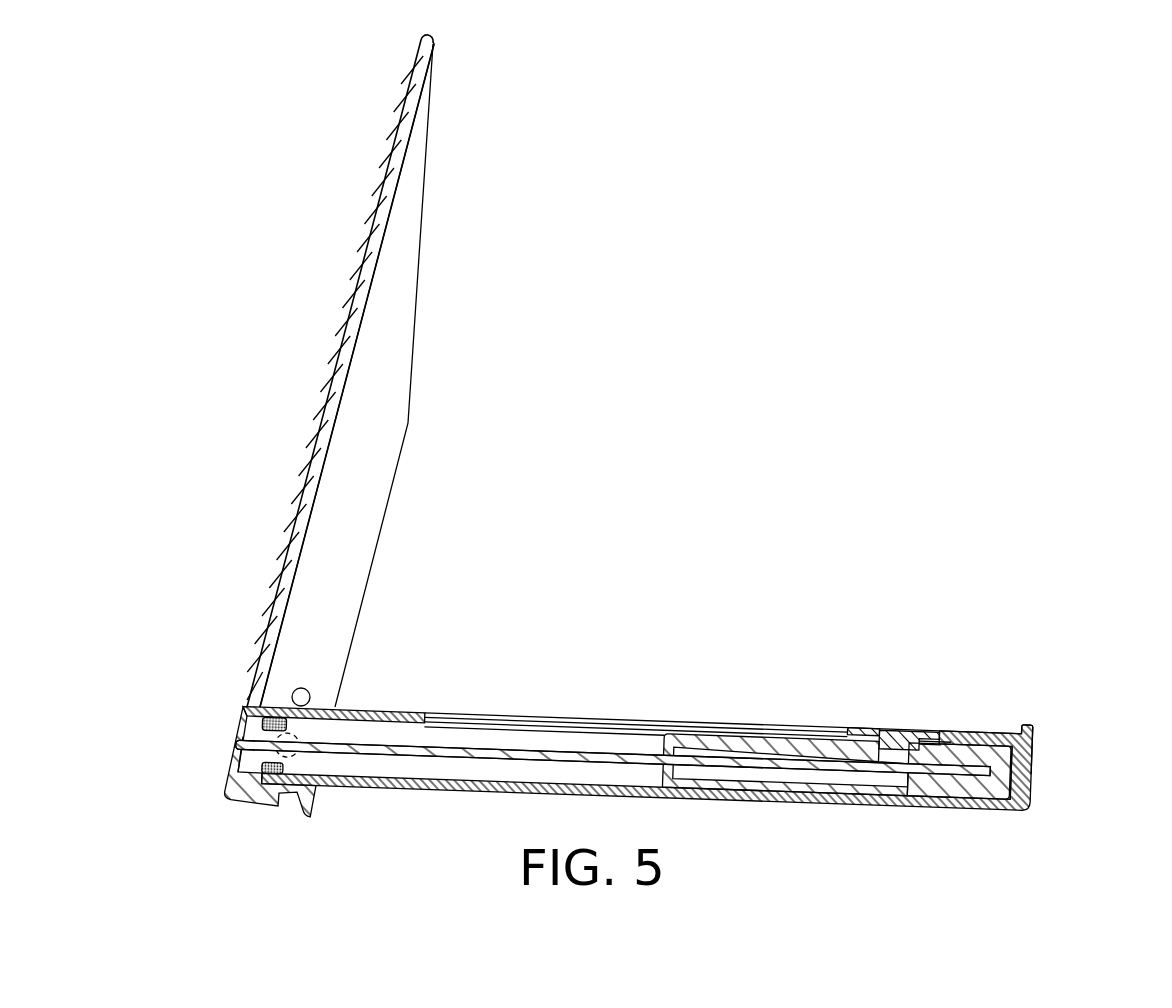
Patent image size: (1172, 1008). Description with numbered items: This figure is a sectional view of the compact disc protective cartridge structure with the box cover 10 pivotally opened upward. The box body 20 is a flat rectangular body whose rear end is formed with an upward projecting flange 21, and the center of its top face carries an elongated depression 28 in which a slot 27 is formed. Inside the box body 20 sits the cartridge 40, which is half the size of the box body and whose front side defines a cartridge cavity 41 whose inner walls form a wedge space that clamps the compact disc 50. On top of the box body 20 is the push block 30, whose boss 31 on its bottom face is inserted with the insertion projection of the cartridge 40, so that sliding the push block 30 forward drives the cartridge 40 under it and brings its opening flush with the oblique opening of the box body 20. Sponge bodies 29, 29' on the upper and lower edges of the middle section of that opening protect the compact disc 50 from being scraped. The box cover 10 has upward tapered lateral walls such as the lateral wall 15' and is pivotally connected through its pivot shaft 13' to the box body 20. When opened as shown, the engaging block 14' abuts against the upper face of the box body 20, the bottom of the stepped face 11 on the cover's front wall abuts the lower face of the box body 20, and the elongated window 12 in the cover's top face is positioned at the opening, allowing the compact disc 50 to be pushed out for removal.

The box cover 10 is at (346, 333).
The lateral wall 15' is at (417, 375).
The engaging block 14' is at (351, 680).
The stepped face 11 is at (307, 818).
The elongated window 12 is at (236, 760).
The sponge body 29' is at (346, 647).
The sponge body 29 is at (206, 782).
The pivot shaft 13' is at (327, 799).
The box body 20 is at (822, 800).
The upward projecting flange 21 is at (1026, 723).
The slot 27 is at (471, 717).
The elongated depression 28 is at (553, 717).
The cartridge cavity 41 is at (696, 745).
The cartridge 40 is at (993, 790).
The compact disc 50 is at (431, 757).
The push block 30 is at (862, 723).
The boss 31 is at (900, 725).